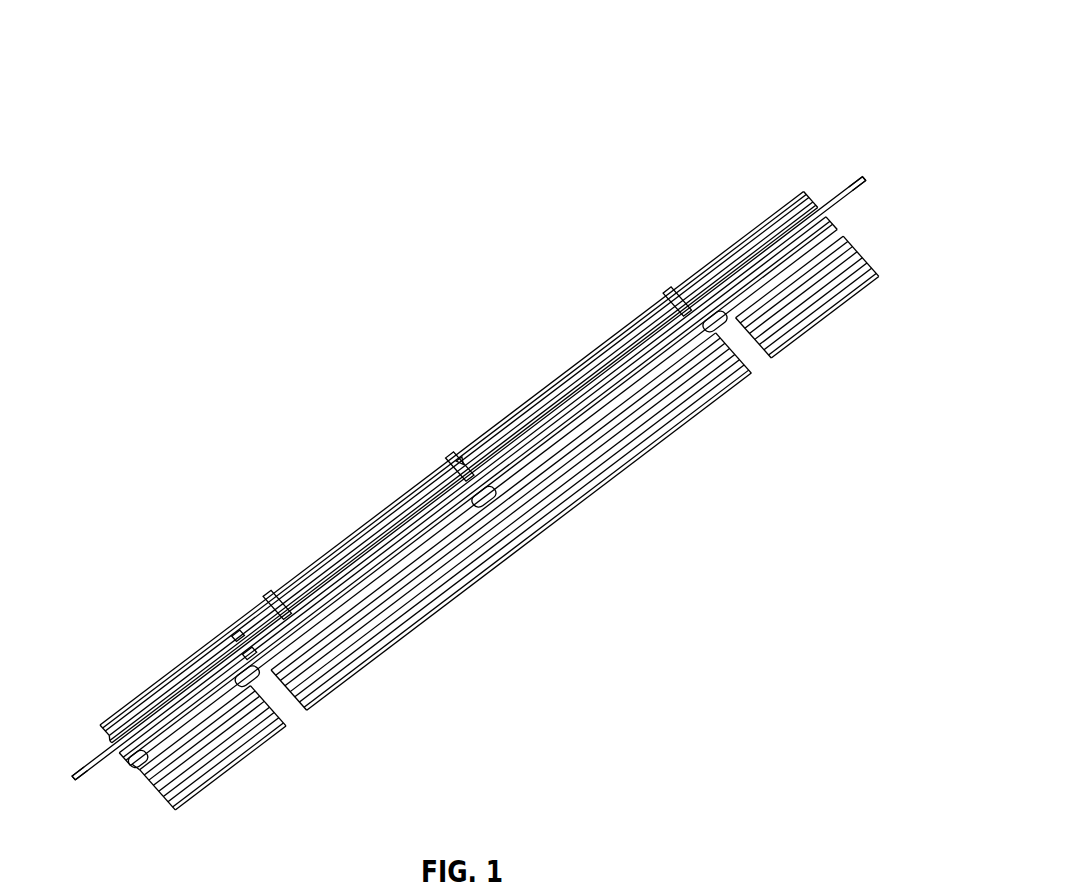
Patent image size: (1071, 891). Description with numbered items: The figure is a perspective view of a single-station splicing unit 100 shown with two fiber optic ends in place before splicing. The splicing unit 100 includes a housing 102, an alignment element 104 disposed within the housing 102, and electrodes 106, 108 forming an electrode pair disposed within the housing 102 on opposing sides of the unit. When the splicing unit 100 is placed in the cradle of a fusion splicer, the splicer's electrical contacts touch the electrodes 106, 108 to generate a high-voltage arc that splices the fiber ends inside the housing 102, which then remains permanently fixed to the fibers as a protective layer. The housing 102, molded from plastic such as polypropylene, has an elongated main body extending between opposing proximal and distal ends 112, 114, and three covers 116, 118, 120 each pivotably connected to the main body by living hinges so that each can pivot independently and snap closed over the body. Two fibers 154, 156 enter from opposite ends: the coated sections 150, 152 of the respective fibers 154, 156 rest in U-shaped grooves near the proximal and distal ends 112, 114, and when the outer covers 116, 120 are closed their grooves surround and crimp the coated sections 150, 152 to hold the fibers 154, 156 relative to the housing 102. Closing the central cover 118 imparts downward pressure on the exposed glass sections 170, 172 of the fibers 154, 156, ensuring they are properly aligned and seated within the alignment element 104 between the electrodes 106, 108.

The single-station splicing unit 100 is at (846, 52).
The housing 102 is at (147, 687).
The alignment element 104 is at (668, 297).
The electrode 106 is at (457, 458).
The electrode 108 is at (490, 497).
The proximal end 112 is at (100, 733).
The distal end 114 is at (812, 200).
The cover 116 is at (223, 763).
The central cover 118 is at (372, 655).
The cover 120 is at (827, 313).
The coated section 150 is at (110, 758).
The coated section 152 is at (838, 206).
The fiber 154 is at (82, 773).
The fiber 156 is at (864, 172).
The exposed glass section 170 is at (273, 597).
The exposed glass section 172 is at (537, 425).